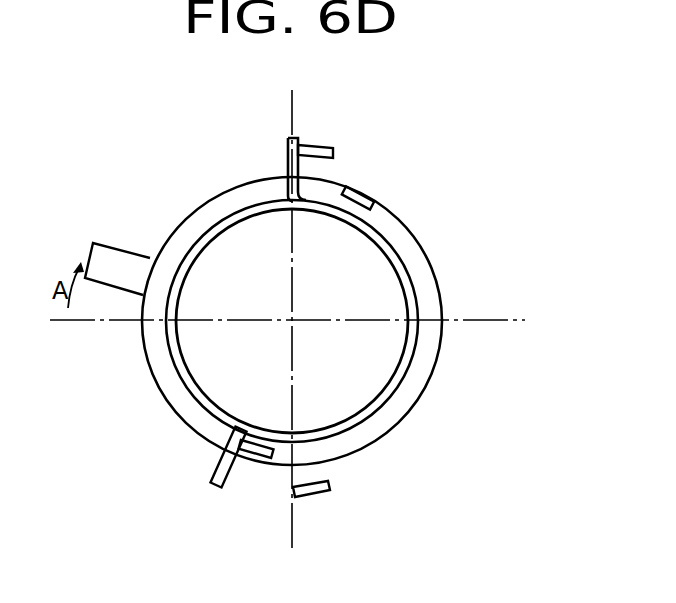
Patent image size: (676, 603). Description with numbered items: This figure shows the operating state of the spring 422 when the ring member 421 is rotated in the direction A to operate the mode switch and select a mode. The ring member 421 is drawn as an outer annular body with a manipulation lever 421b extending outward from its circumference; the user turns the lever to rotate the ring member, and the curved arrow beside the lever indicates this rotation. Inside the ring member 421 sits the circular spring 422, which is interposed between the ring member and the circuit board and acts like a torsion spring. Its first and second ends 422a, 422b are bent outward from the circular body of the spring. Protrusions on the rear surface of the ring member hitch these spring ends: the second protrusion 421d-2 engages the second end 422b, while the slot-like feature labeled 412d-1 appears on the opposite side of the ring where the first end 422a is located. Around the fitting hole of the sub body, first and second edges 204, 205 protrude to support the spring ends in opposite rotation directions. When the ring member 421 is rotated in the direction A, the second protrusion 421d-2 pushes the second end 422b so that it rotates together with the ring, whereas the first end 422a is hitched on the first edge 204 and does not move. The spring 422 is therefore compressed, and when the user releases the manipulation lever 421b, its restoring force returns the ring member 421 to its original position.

The ring member 421 is at (164, 387).
The spring 422 is at (405, 377).
The first end of the spring 422a is at (287, 158).
The second end of the spring 422b is at (214, 467).
The manipulation lever 421b is at (113, 253).
The second protrusion 421d-2 is at (258, 453).
The slot 412d-1 is at (362, 194).
The first edge 204 is at (322, 145).
The second edge 205 is at (318, 494).